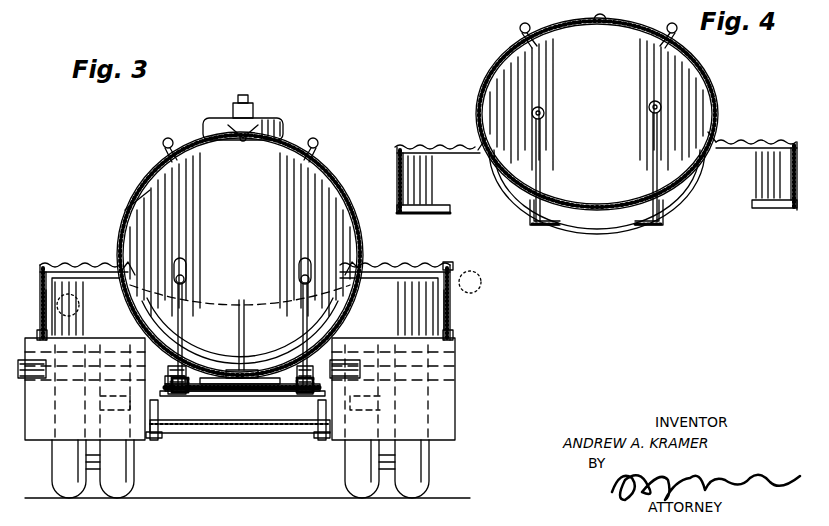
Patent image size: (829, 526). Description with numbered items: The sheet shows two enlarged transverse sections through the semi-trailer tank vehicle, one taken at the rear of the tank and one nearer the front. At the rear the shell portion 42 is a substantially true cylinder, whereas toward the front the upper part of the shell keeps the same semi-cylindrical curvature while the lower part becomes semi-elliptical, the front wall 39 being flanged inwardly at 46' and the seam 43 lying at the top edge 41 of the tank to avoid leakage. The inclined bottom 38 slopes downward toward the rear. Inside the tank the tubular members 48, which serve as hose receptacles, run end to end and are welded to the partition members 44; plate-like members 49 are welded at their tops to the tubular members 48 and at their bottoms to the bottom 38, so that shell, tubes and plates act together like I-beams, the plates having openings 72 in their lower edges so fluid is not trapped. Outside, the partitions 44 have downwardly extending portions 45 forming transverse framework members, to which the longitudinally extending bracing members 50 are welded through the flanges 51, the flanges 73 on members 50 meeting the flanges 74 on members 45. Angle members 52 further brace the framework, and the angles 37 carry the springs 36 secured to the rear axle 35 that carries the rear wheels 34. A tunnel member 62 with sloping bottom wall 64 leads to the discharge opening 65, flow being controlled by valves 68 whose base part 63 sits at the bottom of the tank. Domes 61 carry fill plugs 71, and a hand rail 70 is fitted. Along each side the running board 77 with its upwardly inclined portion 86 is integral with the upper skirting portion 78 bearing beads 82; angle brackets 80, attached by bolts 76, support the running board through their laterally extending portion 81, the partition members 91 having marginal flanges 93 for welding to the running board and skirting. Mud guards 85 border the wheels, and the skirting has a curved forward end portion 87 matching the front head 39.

In FIG. 3, the rear wheels 34 is at (62, 468).
In FIG. 3, the rear axle 35 is at (210, 434).
In FIG. 3, the springs 36 is at (158, 440).
In FIG. 3, the angle members 37 is at (160, 365).
In FIG. 3, the bottom portion of the shell 38 is at (236, 352).
In FIG. 4, the bottom portion of the shell 38 is at (590, 215).
In FIG. 4, the front wall 39 is at (612, 48).
In FIG. 3, the top edge of the shell 41 is at (232, 123).
In FIG. 4, the top edge of the shell 41 is at (596, 24).
In FIG. 3, the shell portion 42 is at (338, 172).
In FIG. 4, the shell portion 42 is at (495, 82).
In FIG. 3, the seam 43 is at (255, 126).
In FIG. 4, the seam 43 is at (608, 20).
In FIG. 3, the partition members 44 is at (150, 185).
In FIG. 3, the downwardly extending portions 45 is at (272, 392).
In FIG. 4, the inward flange of forward head 46' is at (558, 126).
In FIG. 3, the tubular members 48 is at (188, 277).
In FIG. 4, the tubular members 48 is at (545, 110).
In FIG. 3, the plate-like members 49 is at (184, 322).
In FIG. 4, the plate-like members 49 is at (542, 152).
In FIG. 3, the longitudinally extending bracing members 50 is at (185, 370).
In FIG. 4, the longitudinally extending bracing members 50 is at (528, 218).
In FIG. 3, the flanges 51 is at (290, 372).
In FIG. 3, the angle members 52 is at (162, 400).
In FIG. 3, the domes 61 is at (282, 124).
In FIG. 4, the tunnel member 62 is at (452, 0).
In FIG. 3, the valve base 63 is at (240, 368).
In FIG. 4, the sloping bottom wall 64 is at (521, 4).
In FIG. 4, the discharge opening 65 is at (430, 2).
In FIG. 3, the valves 68 is at (246, 302).
In FIG. 3, the hand rail 70 is at (162, 140).
In FIG. 4, the hand rail 70 is at (519, 30).
In FIG. 3, the fill plugs 71 is at (248, 100).
In FIG. 3, the openings 72 is at (178, 333).
In FIG. 4, the openings 72 is at (530, 172).
In FIG. 3, the flanges 73 is at (186, 392).
In FIG. 3, the flanges 74 is at (238, 391).
In FIG. 3, the bolts 76 is at (126, 314).
In FIG. 3, the running board 77 is at (95, 262).
In FIG. 4, the running board 77 is at (422, 146).
In FIG. 3, the upper skirting portion 78 is at (40, 282).
In FIG. 4, the upper skirting portion 78 is at (398, 150).
In FIG. 3, the angle brackets 80 is at (130, 283).
In FIG. 3, the laterally extending portion 81 is at (90, 276).
In FIG. 3, the beads 82 is at (390, 250).
In FIG. 4, the beads 82 is at (400, 145).
In FIG. 3, the mud guards 85 is at (45, 430).
In FIG. 3, the upwardly inclined portion 86 is at (120, 226).
In FIG. 4, the upwardly inclined portion 86 is at (478, 146).
In FIG. 4, the curved forward end portion 87 is at (440, 182).
In FIG. 3, the partition members 91 is at (47, 306).
In FIG. 3, the marginal flanges 93 is at (269, 293).